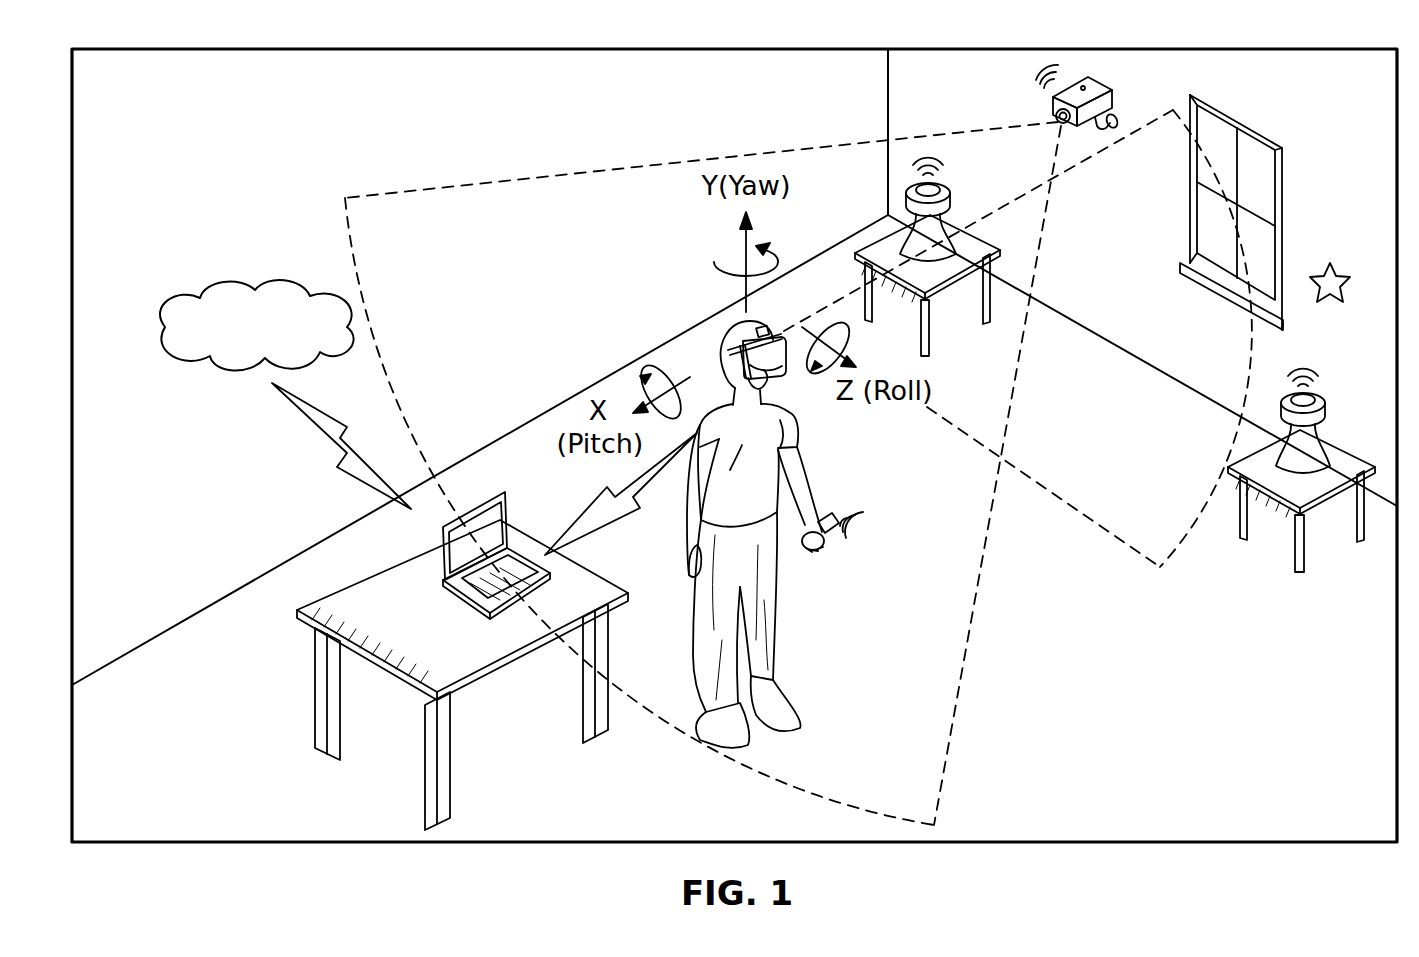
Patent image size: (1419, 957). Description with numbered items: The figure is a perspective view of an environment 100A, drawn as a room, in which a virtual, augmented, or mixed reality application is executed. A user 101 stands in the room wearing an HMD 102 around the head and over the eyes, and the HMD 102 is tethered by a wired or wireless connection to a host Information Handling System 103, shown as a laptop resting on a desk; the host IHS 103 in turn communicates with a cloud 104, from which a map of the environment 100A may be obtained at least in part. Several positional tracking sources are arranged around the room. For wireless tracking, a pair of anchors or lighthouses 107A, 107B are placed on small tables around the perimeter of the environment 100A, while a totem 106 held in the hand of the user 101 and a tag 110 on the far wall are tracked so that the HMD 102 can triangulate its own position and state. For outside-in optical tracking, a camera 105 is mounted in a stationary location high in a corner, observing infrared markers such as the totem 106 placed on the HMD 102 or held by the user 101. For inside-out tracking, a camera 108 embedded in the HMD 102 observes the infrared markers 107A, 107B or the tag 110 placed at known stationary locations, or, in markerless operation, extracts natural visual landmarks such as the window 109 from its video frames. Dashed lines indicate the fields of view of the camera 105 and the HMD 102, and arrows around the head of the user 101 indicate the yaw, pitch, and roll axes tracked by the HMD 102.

The environment 100A is at (163, 48).
The user 101 is at (775, 605).
The HMD 102 is at (786, 368).
The host Information Handling System 103 is at (440, 546).
The cloud 104 is at (172, 300).
The camera 105 is at (1113, 96).
The totem 106 is at (831, 538).
The lighthouse 107A is at (950, 188).
The lighthouse 107B is at (1326, 405).
The camera 108 is at (763, 332).
The window 109 is at (1283, 176).
The tag 110 is at (1342, 281).